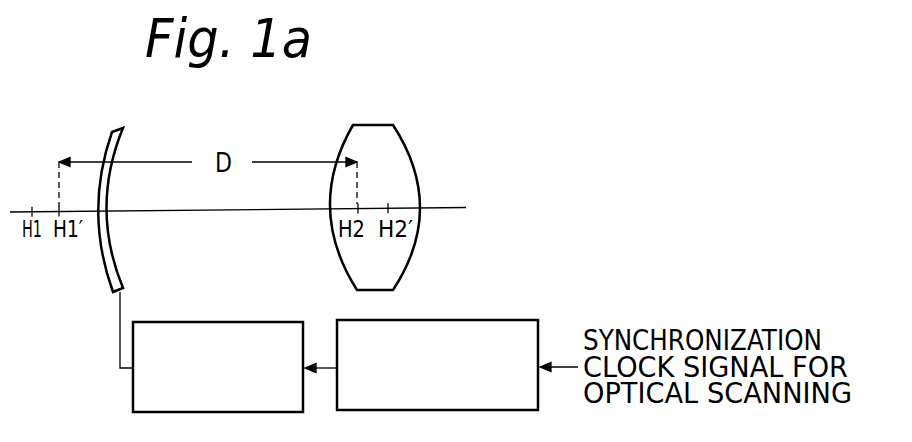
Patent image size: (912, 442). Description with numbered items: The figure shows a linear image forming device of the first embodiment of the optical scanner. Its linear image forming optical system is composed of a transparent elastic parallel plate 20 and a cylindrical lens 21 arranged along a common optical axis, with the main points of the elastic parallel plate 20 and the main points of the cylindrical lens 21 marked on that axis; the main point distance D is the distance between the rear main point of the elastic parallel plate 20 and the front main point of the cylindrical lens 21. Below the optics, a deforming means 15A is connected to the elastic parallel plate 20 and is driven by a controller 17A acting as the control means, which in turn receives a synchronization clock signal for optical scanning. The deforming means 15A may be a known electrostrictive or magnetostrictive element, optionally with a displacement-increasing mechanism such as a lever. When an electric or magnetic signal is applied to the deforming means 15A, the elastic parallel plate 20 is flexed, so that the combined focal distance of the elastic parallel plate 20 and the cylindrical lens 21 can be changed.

The elastic parallel plate 20 is at (113, 129).
The cylindrical lens 21 is at (376, 134).
The deforming means 15A is at (223, 322).
The controller 17A is at (455, 320).